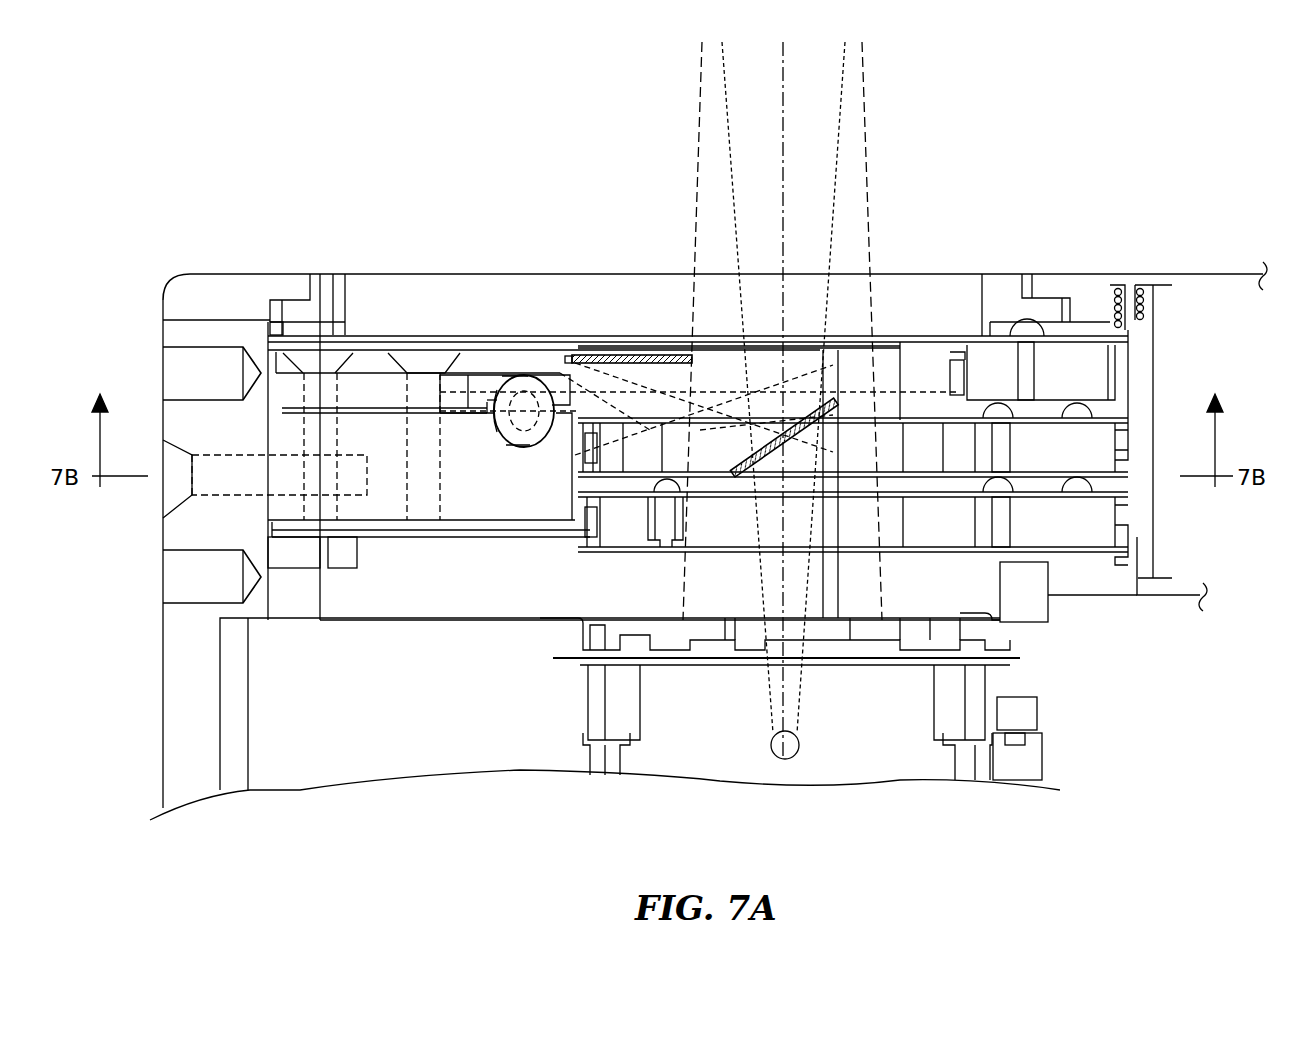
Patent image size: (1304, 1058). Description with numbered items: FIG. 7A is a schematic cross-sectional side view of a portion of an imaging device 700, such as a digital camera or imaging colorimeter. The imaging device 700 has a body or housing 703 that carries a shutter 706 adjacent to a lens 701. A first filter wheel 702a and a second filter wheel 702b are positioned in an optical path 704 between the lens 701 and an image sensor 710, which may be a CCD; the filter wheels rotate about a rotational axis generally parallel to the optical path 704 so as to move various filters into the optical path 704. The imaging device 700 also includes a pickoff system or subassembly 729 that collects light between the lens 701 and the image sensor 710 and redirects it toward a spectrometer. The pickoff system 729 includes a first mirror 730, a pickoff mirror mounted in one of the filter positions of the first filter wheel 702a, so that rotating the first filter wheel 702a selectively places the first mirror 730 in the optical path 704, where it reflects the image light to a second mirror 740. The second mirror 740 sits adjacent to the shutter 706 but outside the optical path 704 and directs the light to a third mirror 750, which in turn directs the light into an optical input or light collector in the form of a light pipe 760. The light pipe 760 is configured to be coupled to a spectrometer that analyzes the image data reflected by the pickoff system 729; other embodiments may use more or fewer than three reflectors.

The imaging device 700 is at (1130, 170).
The lens 701 is at (662, 318).
The first filter wheel 702a is at (1100, 450).
The second filter wheel 702b is at (1100, 512).
The housing 703 is at (243, 283).
The optical path 704 is at (783, 157).
The shutter 706 is at (898, 340).
The image sensor 710 is at (890, 685).
The pickoff system 729 is at (715, 262).
The first mirror 730 is at (832, 403).
The second mirror 740 is at (565, 355).
The third mirror 750 is at (497, 385).
The light pipe 760 is at (527, 392).